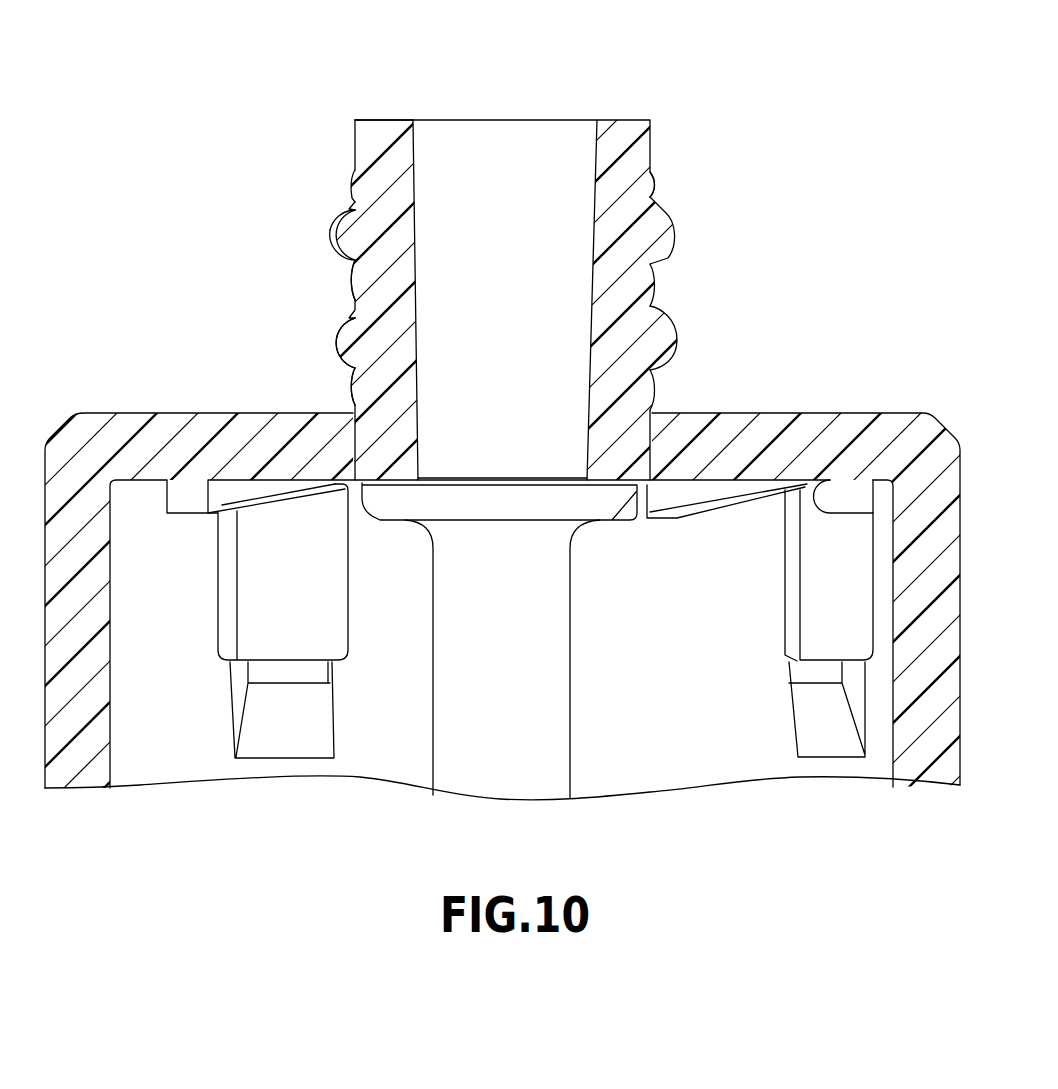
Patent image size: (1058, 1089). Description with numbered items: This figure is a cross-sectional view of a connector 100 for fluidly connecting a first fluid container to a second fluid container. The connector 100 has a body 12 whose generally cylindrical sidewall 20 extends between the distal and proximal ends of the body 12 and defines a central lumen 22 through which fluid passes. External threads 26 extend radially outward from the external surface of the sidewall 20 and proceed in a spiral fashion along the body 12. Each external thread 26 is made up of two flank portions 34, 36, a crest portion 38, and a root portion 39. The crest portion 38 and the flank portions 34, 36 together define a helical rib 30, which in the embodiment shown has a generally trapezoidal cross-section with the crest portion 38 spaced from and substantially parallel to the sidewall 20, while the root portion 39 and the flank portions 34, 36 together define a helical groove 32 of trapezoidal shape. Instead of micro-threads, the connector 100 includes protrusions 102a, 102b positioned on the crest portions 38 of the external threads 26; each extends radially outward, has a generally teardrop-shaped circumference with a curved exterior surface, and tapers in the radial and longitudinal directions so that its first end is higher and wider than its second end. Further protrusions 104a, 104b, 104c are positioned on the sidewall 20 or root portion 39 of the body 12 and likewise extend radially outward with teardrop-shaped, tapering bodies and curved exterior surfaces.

The connector 100 is at (302, 54).
The body 12 is at (622, 128).
The sidewall 20 is at (355, 133).
The central lumen 22 is at (483, 148).
The external threads 26 is at (337, 223).
The helical rib 30 is at (340, 230).
The helical groove 32 is at (353, 262).
The flank portion 34 is at (347, 320).
The flank portion 36 is at (347, 362).
The crest portion 38 is at (343, 328).
The root portion 39 is at (355, 200).
The protrusion 102a is at (337, 240).
The protrusion 102b is at (337, 342).
The protrusion 104a is at (352, 178).
The protrusion 104b is at (352, 288).
The protrusion 104c is at (353, 403).